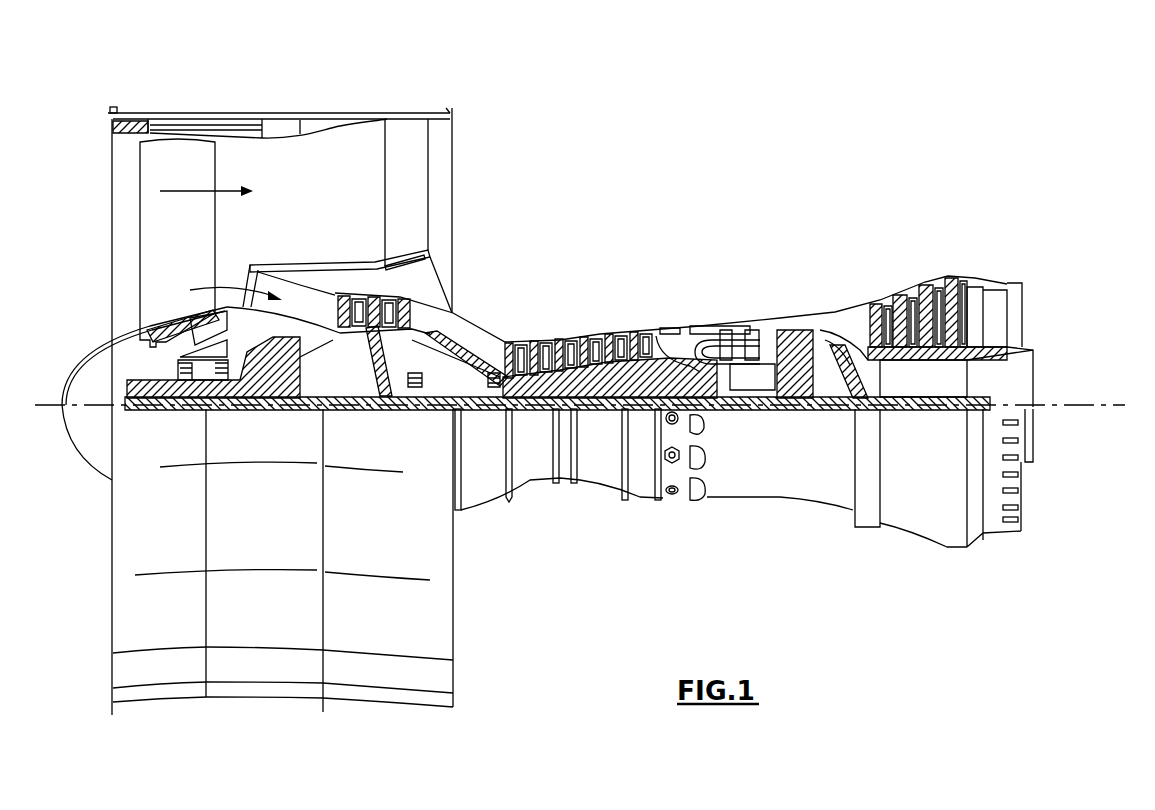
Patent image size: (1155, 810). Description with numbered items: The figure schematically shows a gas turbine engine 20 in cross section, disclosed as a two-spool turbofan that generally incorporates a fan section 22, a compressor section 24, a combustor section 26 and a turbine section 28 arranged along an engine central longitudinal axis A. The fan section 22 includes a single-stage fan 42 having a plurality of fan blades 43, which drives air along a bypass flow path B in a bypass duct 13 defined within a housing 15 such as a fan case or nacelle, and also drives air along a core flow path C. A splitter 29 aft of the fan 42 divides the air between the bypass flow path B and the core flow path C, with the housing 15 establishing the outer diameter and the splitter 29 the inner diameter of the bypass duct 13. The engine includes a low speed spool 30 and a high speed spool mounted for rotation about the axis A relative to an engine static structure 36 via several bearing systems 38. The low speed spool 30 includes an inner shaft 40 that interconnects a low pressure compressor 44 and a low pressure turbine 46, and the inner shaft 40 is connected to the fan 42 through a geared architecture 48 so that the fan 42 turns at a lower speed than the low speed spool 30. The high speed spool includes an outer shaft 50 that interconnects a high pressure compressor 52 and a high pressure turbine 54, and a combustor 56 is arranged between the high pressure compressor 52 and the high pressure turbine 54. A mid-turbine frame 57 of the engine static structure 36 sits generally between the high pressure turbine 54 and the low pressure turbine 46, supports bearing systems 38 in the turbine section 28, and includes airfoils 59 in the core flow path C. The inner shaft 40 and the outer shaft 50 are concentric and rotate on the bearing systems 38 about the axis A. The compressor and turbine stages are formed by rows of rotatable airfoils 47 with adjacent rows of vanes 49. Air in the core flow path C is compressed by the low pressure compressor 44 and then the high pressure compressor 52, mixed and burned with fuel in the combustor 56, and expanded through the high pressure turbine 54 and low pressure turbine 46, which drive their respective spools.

The gas turbine engine 20 is at (714, 172).
The fan section 22 is at (547, 376).
The compressor section 24 is at (506, 298).
The combustor section 26 is at (715, 314).
The turbine section 28 is at (950, 302).
The bypass duct 13 is at (332, 146).
The housing 15 is at (285, 118).
The splitter 29 is at (257, 290).
The low speed spool 30 is at (602, 420).
The engine static structure 36 is at (640, 510).
The bearing systems 38 is at (417, 395).
The inner shaft 40 is at (472, 410).
The fan 42 is at (192, 246).
The fan blades 43 is at (203, 250).
The low pressure compressor 44 is at (427, 253).
The low pressure turbine 46 is at (917, 300).
The rotatable airfoils 47 is at (340, 312).
The geared architecture 48 is at (290, 387).
The vanes 49 is at (362, 320).
The outer shaft 50 is at (716, 407).
The high pressure compressor 52 is at (583, 342).
The high pressure turbine 54 is at (782, 340).
The combustor 56 is at (710, 347).
The mid-turbine frame 57 is at (840, 308).
The airfoils 59 is at (870, 372).
The engine central longitudinal axis A is at (1108, 405).
The bypass flow path B is at (190, 191).
The core flow path C is at (227, 285).